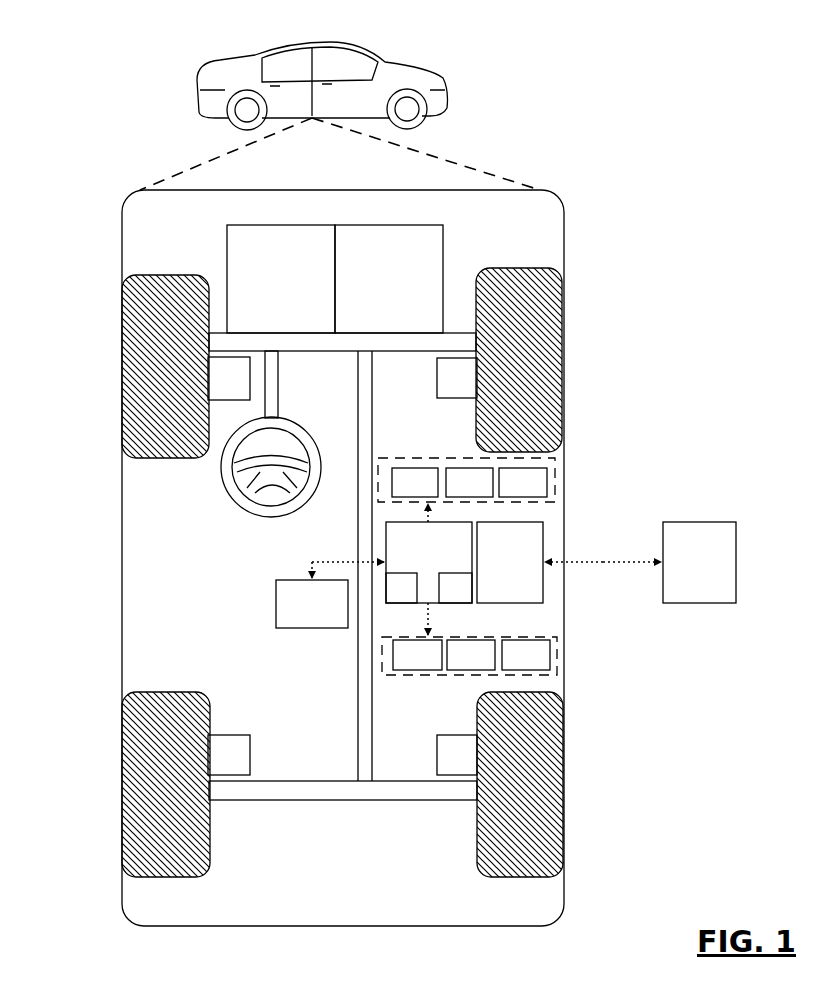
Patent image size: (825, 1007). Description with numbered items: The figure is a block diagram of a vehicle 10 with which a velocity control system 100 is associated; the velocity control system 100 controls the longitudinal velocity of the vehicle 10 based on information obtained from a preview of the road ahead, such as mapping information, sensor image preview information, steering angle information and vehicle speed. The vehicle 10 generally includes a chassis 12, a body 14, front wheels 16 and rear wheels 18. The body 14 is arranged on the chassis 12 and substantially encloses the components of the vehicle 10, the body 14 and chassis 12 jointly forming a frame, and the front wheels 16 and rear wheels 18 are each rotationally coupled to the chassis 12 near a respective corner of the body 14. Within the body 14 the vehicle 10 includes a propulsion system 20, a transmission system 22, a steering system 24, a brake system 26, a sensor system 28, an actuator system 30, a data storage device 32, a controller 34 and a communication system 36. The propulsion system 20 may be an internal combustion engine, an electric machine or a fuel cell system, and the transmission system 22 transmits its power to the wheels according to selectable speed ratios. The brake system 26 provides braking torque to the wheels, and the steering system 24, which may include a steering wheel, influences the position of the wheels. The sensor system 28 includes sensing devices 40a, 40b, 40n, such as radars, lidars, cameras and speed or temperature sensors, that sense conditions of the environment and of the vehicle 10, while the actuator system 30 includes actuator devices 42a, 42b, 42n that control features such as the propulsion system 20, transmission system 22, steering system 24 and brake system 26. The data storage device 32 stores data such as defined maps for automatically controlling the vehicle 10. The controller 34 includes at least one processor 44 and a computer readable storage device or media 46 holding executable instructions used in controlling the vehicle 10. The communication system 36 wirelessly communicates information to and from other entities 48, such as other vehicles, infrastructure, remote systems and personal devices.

The vehicle 10 is at (208, 97).
The velocity control system 100 is at (588, 203).
The chassis 12 is at (357, 718).
The body 14 is at (121, 545).
The front wheels 16 is at (168, 275).
The rear wheels 18 is at (181, 877).
The propulsion system 20 is at (281, 279).
The transmission system 22 is at (389, 279).
The steering system 24 is at (303, 374).
The brake system 26 is at (342, 566).
The sensor system 28 is at (402, 458).
The actuator system 30 is at (425, 677).
The data storage device 32 is at (312, 604).
The controller 34 is at (429, 562).
The communication system 36 is at (510, 562).
The sensing device 40a is at (415, 482).
The sensing device 40b is at (469, 482).
The sensing device 40n is at (523, 482).
The actuator device 42a is at (417, 655).
The actuator device 42b is at (471, 655).
The actuator device 42n is at (526, 655).
The processor 44 is at (401, 588).
The computer readable storage device or media 46 is at (455, 588).
The other entities 48 is at (699, 562).